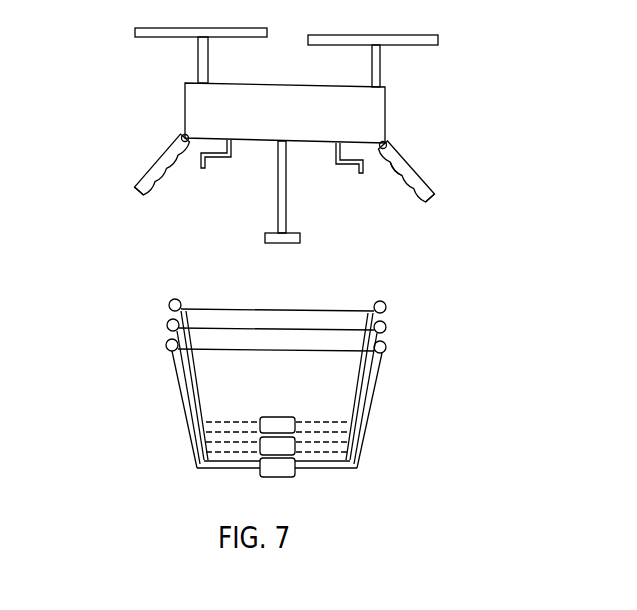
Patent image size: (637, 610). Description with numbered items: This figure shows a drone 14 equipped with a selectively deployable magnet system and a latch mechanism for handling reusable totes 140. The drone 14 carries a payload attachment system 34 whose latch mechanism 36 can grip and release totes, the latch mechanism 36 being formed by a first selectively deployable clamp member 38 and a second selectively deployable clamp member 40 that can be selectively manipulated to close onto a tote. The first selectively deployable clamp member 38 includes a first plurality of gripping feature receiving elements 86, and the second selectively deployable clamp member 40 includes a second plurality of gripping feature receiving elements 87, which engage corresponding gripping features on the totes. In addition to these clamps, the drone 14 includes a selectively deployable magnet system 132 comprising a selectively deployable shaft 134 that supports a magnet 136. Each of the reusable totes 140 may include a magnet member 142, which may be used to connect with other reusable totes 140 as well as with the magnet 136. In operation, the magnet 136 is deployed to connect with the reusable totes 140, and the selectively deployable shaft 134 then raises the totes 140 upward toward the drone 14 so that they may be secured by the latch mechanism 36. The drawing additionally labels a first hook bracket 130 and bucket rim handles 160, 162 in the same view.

The drone 14 is at (442, 111).
The payload attachment system 34 is at (468, 178).
The latch mechanism 36 is at (141, 134).
The first selectively deployable clamp member 38 is at (146, 178).
The second selectively deployable clamp member 40 is at (412, 163).
The first plurality of gripping feature receiving elements 86 is at (150, 204).
The second plurality of gripping feature receiving elements 87 is at (384, 181).
The first hook bracket 130 is at (199, 170).
The selectively deployable magnet system 132 is at (328, 226).
The selectively deployable shaft 134 is at (279, 197).
The magnet 136 is at (272, 242).
The reusable totes 140 is at (296, 359).
The magnet member 142 is at (283, 424).
The bucket rim handles 160 is at (142, 312).
The bucket rim handles 162 is at (426, 326).